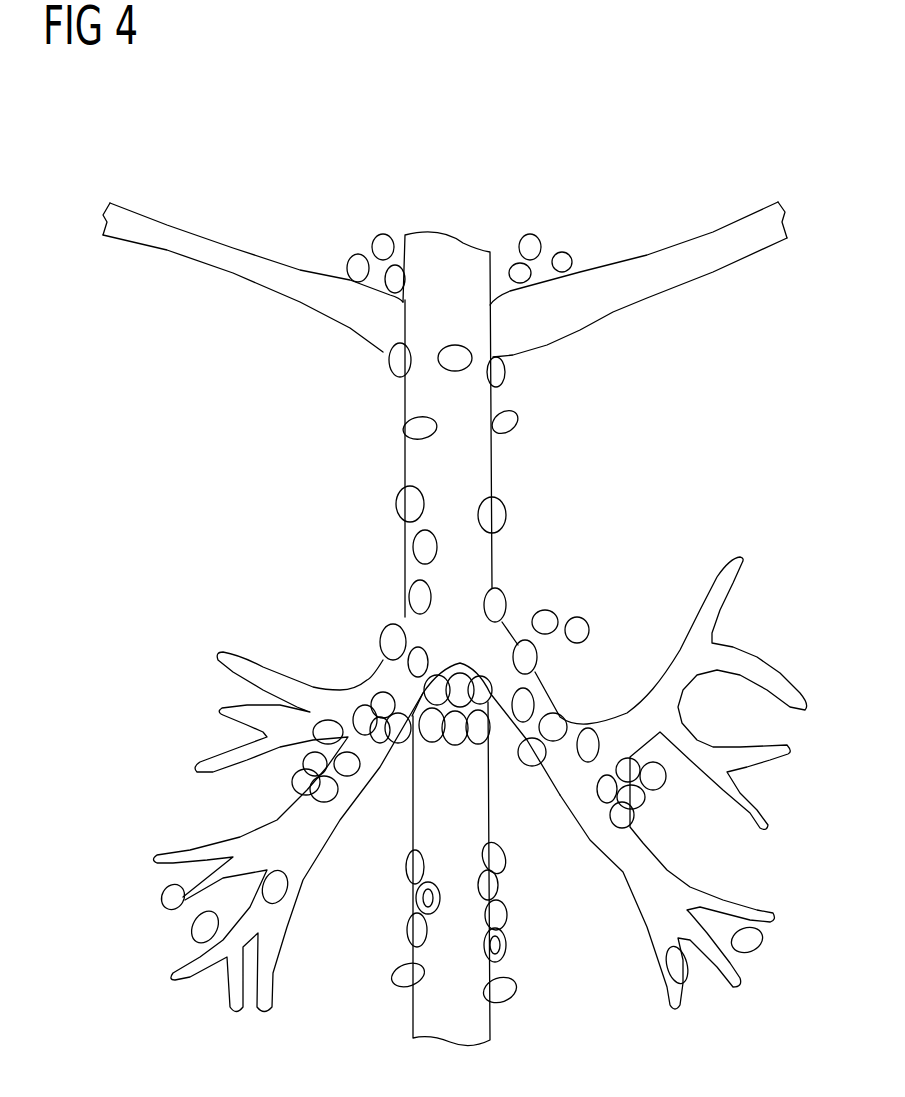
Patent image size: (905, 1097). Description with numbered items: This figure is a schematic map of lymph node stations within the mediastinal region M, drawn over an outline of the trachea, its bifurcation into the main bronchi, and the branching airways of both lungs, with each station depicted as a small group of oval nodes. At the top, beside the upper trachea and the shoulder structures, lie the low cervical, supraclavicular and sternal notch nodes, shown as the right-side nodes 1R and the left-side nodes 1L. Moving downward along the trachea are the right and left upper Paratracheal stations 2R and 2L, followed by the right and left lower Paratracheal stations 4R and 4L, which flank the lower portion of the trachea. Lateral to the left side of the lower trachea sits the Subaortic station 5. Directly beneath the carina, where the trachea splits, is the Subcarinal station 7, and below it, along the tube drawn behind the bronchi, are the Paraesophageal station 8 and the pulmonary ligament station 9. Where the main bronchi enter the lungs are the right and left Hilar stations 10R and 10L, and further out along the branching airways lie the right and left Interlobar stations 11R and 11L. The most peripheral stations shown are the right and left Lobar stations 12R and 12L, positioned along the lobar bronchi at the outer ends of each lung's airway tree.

The mediastinal region M is at (445, 117).
The right low cervical, supraclavicular and sternal notch nodes 1R is at (362, 222).
The left low cervical, supraclavicular and sternal notch nodes 1L is at (548, 220).
The right upper Paratracheal node station 2R is at (378, 392).
The left upper Paratracheal node station 2L is at (523, 392).
The right lower Paratracheal node station 4R is at (373, 572).
The left lower Paratracheal node station 4L is at (518, 570).
The Subaortic node station 5 is at (577, 603).
The Subcarinal node station 7 is at (452, 756).
The Paraesophageal node station 8 is at (525, 918).
The pulmonary ligament node station 9 is at (378, 978).
The right Hilar node station 10R is at (357, 670).
The left Hilar node station 10L is at (580, 715).
The right Interlobar node station 11R is at (283, 795).
The left Interlobar node station 11L is at (655, 805).
The right Lobar node station 12R is at (152, 893).
The left Lobar node station 12L is at (758, 967).